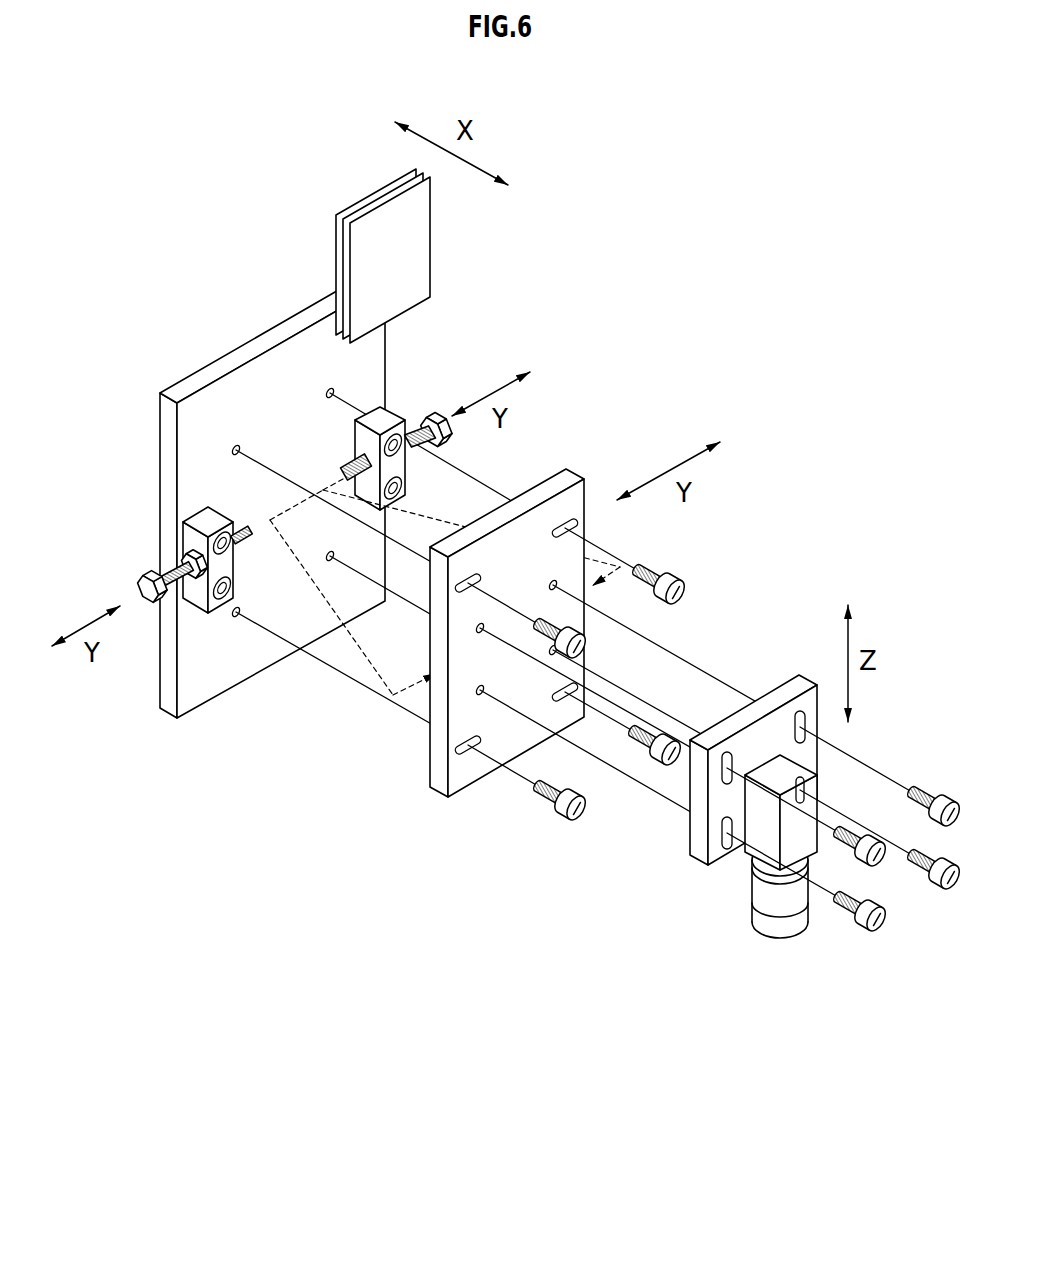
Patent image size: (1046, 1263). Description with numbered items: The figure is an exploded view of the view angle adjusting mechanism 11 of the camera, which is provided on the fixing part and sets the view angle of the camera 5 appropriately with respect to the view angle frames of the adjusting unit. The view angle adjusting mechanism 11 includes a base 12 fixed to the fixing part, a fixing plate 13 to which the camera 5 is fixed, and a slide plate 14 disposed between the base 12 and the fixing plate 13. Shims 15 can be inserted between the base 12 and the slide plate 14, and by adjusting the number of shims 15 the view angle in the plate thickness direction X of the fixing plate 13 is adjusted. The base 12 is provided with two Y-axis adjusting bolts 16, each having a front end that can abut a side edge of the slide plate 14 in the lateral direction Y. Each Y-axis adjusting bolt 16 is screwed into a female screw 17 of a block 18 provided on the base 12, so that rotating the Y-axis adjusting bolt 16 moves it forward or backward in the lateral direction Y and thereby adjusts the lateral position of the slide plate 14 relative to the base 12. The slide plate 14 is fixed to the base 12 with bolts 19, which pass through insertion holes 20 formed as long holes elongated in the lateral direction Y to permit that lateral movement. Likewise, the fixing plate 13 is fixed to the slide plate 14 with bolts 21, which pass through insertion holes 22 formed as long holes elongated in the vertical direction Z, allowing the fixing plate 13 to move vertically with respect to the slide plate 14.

The camera 5 is at (783, 930).
The view angle adjusting mechanism 11 is at (246, 205).
The base 12 is at (255, 393).
The fixing plate 13 is at (773, 704).
The slide plate 14 is at (559, 512).
The shims 15 is at (397, 232).
The Y-axis adjusting bolt 16 is at (148, 585).
The female screw 17 is at (177, 557).
The block 18 is at (205, 515).
The bolt 19 is at (575, 810).
The insertion hole 20 is at (471, 778).
The bolt 21 is at (878, 930).
The insertion hole 22 is at (692, 853).